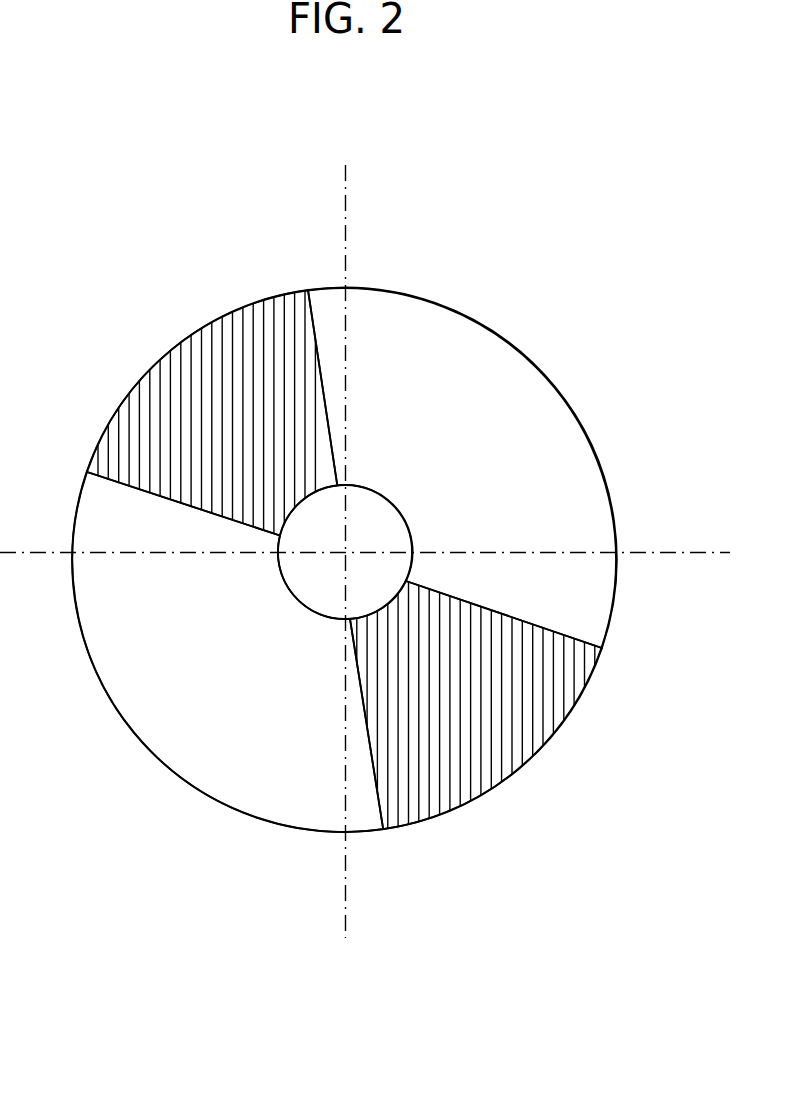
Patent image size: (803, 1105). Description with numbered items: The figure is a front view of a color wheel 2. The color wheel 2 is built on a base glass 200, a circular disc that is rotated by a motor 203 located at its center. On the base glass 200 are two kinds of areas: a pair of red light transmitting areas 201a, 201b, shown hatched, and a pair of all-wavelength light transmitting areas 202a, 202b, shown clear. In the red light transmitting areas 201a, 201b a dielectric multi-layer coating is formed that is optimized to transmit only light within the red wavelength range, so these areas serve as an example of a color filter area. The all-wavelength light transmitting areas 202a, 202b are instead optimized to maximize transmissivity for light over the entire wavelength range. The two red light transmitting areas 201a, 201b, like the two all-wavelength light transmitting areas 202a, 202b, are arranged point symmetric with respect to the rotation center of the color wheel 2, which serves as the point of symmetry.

The color wheel 2 is at (423, 197).
The base glass 200 is at (234, 810).
The red light transmitting area 201a is at (227, 393).
The red light transmitting area 201b is at (487, 708).
The all-wavelength light transmitting area 202a is at (505, 405).
The all-wavelength light transmitting area 202b is at (218, 668).
The motor 203 is at (368, 533).